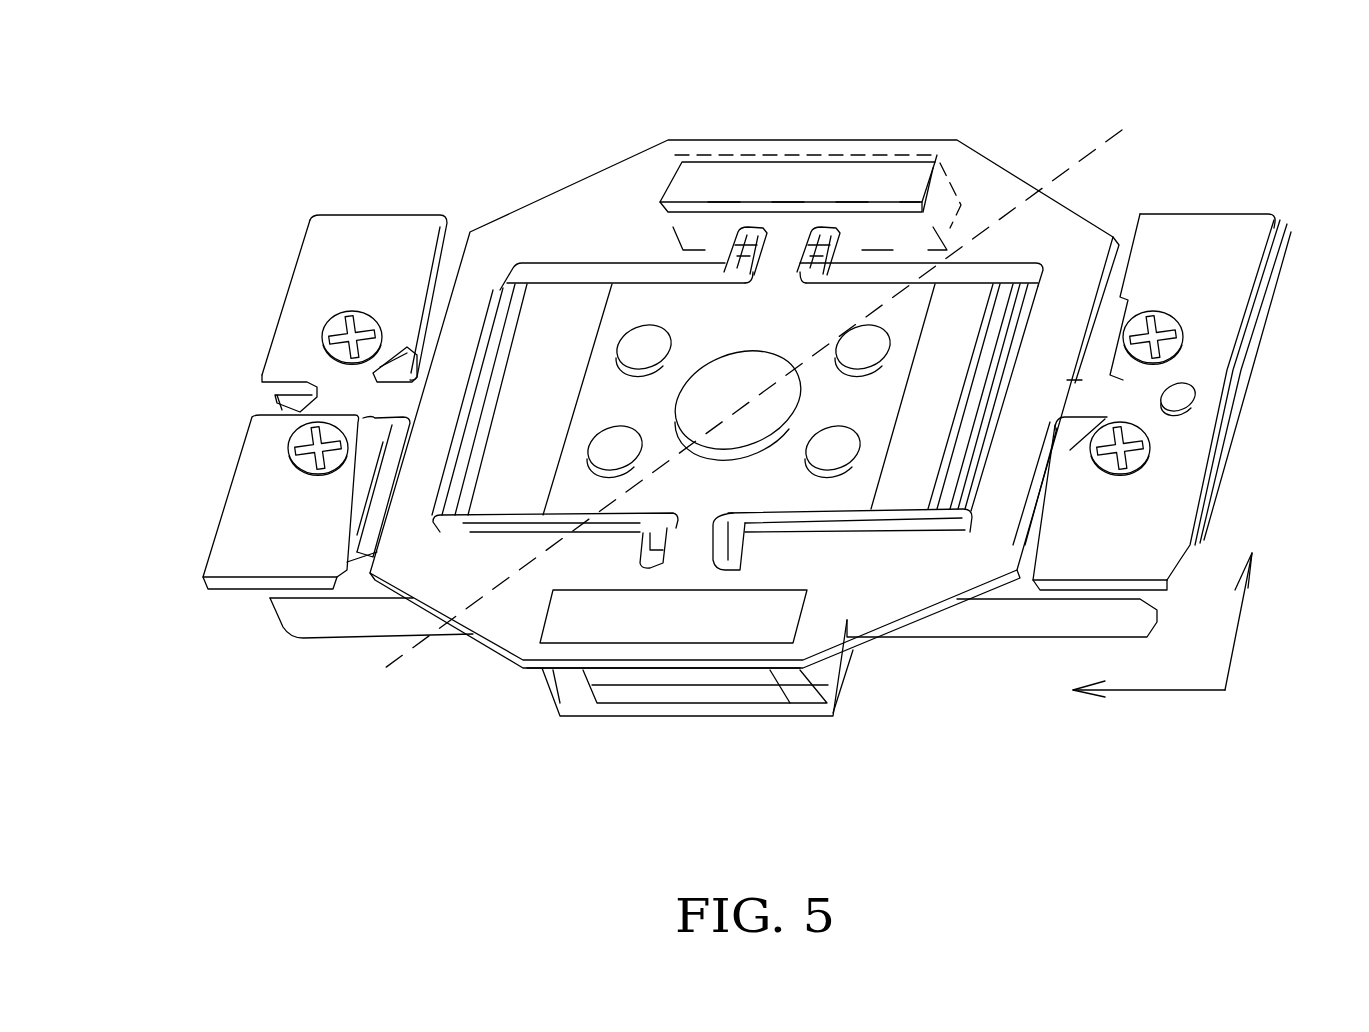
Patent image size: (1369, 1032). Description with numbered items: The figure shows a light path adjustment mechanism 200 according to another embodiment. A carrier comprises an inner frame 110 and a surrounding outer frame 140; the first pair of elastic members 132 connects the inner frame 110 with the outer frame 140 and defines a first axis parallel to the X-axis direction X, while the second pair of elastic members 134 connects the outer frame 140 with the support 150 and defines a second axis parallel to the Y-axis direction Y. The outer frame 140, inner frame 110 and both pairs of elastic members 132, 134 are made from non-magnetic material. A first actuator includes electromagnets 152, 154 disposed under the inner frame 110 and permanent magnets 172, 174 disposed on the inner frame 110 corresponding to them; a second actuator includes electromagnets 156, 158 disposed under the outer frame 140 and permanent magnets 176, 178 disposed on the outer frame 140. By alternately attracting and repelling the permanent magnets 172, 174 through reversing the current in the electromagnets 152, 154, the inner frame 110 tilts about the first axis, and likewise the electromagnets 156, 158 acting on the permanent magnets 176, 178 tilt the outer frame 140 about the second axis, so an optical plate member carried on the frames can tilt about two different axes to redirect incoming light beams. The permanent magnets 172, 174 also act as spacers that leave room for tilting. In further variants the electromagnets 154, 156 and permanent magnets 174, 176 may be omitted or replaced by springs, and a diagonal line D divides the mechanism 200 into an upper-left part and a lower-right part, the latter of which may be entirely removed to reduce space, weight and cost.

The light path adjustment mechanism 200 is at (203, 44).
The inner frame 110 is at (462, 531).
The first pair of elastic members 132 is at (785, 257).
The second pair of elastic members 134 is at (387, 403).
The outer frame 140 is at (603, 170).
The support 150 is at (380, 240).
The electromagnet 152 is at (503, 522).
The electromagnet 154 is at (927, 523).
The electromagnet 156 is at (730, 680).
The electromagnet 158 is at (845, 150).
The permanent magnet 172 is at (537, 337).
The permanent magnet 174 is at (983, 330).
The permanent magnet 176 is at (633, 643).
The permanent magnet 178 is at (673, 183).
The diagonal line D is at (1065, 173).
The X-axis direction X is at (1244, 604).
The Y-axis direction Y is at (1130, 694).